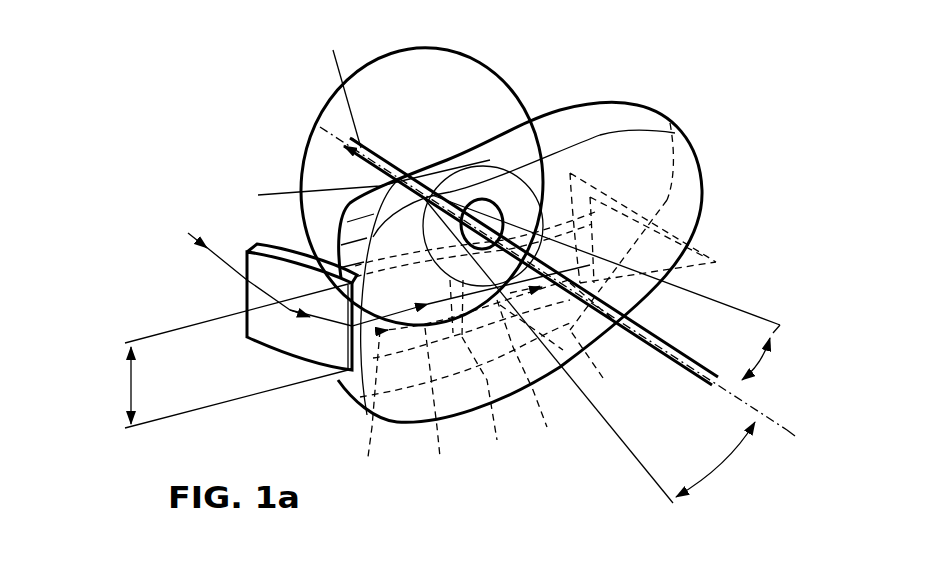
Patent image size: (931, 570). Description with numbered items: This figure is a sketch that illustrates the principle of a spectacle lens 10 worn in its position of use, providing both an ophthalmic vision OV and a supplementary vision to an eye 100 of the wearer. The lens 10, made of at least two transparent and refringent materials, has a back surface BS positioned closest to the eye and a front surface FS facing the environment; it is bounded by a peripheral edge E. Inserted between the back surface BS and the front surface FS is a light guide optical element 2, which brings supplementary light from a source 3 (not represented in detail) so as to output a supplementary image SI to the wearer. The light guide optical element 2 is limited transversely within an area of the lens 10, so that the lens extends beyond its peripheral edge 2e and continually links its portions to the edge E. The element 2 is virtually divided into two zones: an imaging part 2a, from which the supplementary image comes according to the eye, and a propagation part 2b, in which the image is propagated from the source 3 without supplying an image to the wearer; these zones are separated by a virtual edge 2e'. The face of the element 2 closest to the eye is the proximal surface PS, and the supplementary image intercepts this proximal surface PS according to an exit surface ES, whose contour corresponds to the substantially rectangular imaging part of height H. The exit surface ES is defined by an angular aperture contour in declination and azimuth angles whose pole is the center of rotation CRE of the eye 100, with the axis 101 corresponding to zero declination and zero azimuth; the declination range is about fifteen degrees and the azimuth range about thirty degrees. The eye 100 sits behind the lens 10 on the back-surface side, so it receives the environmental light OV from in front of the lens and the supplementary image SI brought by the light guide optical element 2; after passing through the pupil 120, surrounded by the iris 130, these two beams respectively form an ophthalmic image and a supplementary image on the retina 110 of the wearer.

The eye 100 is at (386, 87).
The retina 110 is at (306, 120).
The pupil 120 is at (492, 198).
The iris 130 is at (477, 165).
The axis 101 is at (680, 372).
The spectacle lens 10 is at (602, 128).
The light guide optical element 2 is at (557, 197).
The imaging part 2a is at (530, 374).
The propagation part 2b is at (440, 407).
The peripheral edge 2e is at (660, 251).
The virtual edge 2e' is at (487, 374).
The source 3 is at (297, 360).
The ophthalmic vision OV is at (697, 360).
The supplementary image SI is at (360, 162).
The center of rotation of the eye CRE is at (350, 184).
The back surface BS is at (647, 173).
The front surface FS is at (664, 201).
The peripheral edge of the lens E is at (703, 158).
The exit surface ES is at (563, 342).
The proximal surface PS is at (366, 408).
The height H is at (230, 355).